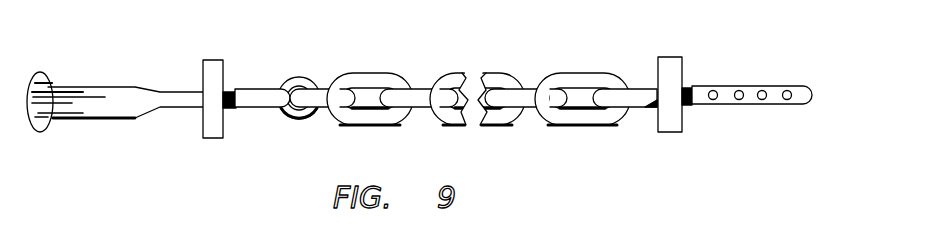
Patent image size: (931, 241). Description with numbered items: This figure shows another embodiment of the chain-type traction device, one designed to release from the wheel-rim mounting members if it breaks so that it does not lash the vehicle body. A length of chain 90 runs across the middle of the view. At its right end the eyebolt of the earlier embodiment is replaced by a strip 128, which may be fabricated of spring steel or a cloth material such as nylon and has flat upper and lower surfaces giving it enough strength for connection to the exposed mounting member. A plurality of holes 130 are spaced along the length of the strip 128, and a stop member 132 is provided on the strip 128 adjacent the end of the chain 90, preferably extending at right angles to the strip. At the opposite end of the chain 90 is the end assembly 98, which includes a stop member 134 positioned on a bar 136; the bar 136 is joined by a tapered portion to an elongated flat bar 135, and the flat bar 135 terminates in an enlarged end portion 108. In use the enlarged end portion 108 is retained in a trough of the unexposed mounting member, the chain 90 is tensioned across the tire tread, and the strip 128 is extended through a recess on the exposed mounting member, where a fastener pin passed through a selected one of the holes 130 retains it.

The chain 90 is at (503, 72).
The end assembly 98 is at (115, 83).
The enlarged end portion 108 is at (47, 72).
The strip 128 is at (752, 91).
The holes 130 is at (743, 100).
The stop member 132 is at (663, 57).
The stop member 134 is at (216, 60).
The elongated flat bar 135 is at (113, 87).
The bar 136 is at (247, 110).